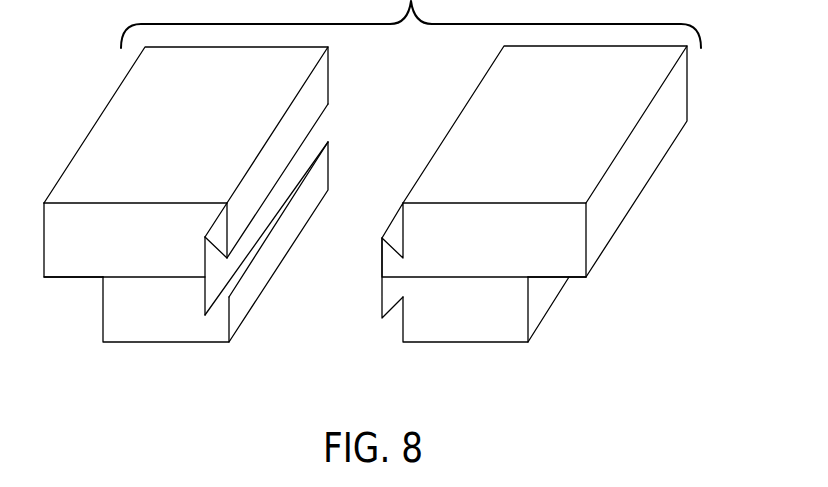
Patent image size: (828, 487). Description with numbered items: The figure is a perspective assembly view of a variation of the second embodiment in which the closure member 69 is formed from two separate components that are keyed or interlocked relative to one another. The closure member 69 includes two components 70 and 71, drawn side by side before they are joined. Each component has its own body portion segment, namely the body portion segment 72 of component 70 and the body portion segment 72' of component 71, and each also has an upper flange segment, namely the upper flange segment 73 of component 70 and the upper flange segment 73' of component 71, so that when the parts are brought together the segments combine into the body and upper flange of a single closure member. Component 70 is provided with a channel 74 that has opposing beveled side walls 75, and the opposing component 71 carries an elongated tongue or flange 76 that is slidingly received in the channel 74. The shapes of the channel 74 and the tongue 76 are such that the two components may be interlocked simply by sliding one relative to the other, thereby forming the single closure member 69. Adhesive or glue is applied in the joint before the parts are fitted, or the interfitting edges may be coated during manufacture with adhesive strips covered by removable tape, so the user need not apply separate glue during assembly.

The closure member 69 is at (261, 336).
The component 70 is at (127, 93).
The component 71 is at (488, 93).
The body portion segment 72 is at (215, 265).
The body portion segment 72' is at (486, 333).
The upper flange segment 73 is at (73, 307).
The upper flange segment 73' is at (562, 307).
The channel 74 is at (306, 156).
The beveled side walls 75 is at (215, 247).
The elongated tongue or flange 76 is at (385, 297).